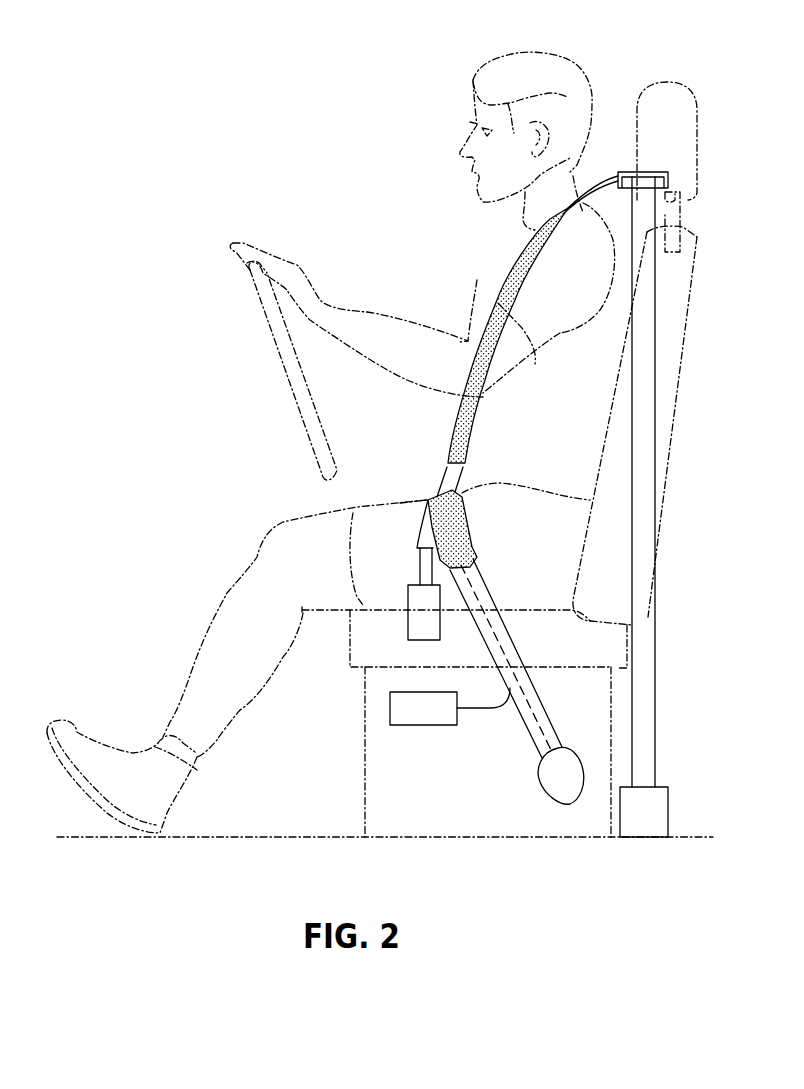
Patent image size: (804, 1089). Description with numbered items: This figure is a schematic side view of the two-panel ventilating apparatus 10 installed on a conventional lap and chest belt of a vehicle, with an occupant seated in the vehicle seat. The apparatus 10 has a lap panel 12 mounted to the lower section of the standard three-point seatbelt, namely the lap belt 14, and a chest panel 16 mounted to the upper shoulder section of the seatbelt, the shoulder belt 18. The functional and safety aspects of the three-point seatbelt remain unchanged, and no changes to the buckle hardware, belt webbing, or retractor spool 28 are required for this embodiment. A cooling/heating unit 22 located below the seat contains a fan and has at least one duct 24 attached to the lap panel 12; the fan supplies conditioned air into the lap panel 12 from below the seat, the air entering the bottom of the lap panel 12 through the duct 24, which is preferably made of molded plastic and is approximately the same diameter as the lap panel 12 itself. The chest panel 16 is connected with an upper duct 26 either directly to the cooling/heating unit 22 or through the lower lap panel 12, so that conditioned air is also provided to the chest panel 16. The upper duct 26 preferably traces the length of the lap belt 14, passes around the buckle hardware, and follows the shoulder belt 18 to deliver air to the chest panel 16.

The apparatus 10 is at (228, 133).
The lap panel 12 is at (448, 517).
The lap belt 14 is at (535, 720).
The chest panel 16 is at (518, 265).
The shoulder belt 18 is at (655, 462).
The cooling/heating unit 22 is at (390, 712).
The duct 24 is at (483, 710).
The upper duct 26 is at (440, 482).
The retractor spool 28 is at (670, 810).